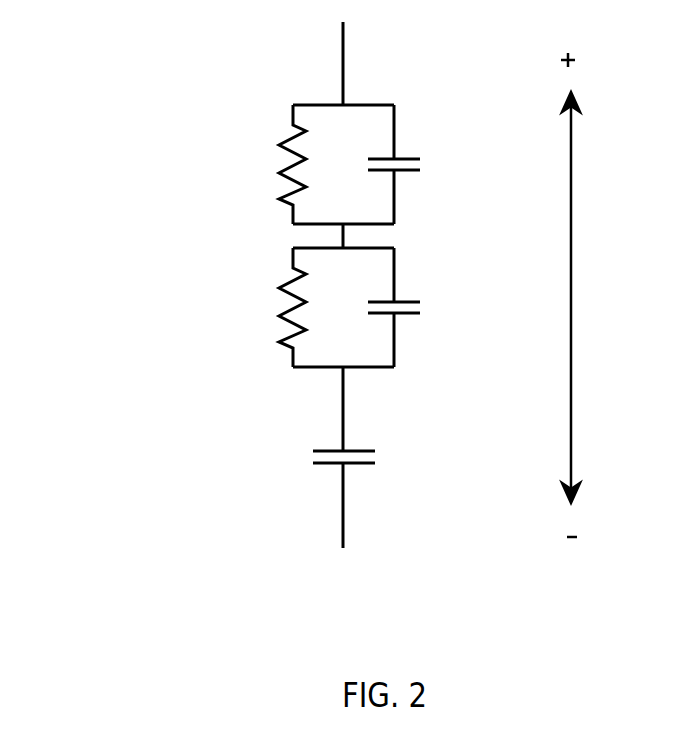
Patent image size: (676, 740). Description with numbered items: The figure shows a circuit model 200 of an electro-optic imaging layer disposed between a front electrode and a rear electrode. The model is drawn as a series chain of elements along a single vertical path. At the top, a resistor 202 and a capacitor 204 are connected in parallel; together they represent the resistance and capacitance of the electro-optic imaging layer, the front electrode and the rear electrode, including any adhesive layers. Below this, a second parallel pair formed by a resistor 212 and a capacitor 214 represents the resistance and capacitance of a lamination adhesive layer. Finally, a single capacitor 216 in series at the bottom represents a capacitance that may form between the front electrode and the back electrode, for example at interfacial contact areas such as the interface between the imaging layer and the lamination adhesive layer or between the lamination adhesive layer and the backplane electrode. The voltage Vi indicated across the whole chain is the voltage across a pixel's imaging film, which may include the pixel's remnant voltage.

The equivalent circuit model 200 is at (93, 37).
The resistor 202 is at (265, 155).
The capacitor 204 is at (425, 159).
The resistor 212 is at (270, 297).
The capacitor 214 is at (428, 308).
The capacitor 216 is at (395, 454).